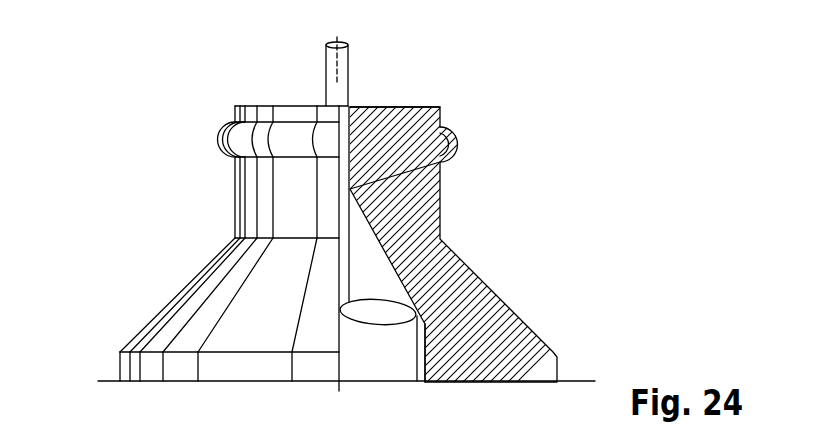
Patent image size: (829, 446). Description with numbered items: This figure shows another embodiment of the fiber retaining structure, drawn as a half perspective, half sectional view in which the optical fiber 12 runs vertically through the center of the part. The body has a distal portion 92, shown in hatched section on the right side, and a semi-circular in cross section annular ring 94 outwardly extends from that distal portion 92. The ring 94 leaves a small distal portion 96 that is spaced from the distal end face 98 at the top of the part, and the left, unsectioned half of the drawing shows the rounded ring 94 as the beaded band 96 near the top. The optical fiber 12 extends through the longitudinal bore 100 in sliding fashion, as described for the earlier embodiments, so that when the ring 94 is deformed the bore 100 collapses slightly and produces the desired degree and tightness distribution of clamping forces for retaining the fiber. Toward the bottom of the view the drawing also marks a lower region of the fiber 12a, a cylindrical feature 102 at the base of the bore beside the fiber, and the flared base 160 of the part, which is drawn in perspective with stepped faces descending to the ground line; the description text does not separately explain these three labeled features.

The optical fiber 12 is at (348, 83).
The rod lower end 12a is at (421, 347).
The distal portion 92 is at (443, 213).
The annular ring 94 is at (460, 146).
The small distal portion 96 is at (233, 118).
The distal end face 98 is at (405, 108).
The longitudinal bore 100 is at (348, 180).
The cylindrical insert 102 is at (416, 344).
The flared base 160 is at (150, 289).